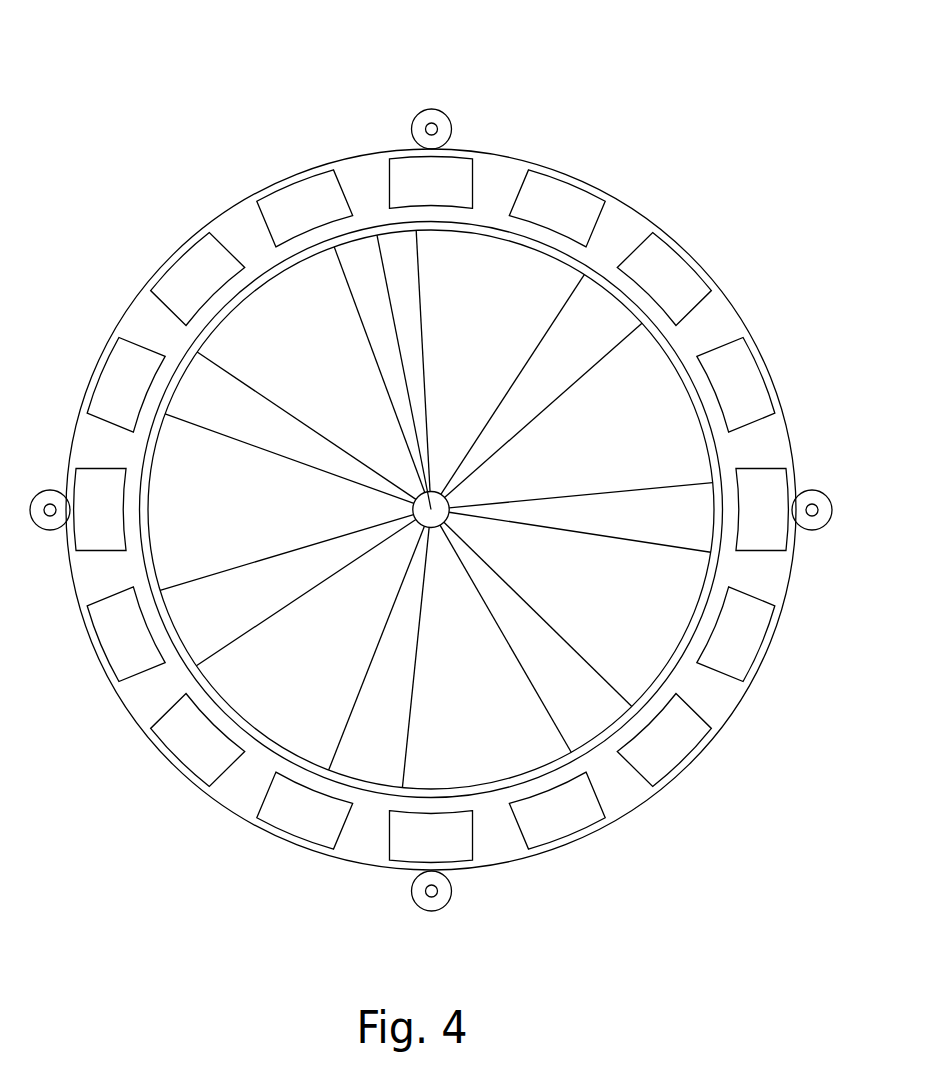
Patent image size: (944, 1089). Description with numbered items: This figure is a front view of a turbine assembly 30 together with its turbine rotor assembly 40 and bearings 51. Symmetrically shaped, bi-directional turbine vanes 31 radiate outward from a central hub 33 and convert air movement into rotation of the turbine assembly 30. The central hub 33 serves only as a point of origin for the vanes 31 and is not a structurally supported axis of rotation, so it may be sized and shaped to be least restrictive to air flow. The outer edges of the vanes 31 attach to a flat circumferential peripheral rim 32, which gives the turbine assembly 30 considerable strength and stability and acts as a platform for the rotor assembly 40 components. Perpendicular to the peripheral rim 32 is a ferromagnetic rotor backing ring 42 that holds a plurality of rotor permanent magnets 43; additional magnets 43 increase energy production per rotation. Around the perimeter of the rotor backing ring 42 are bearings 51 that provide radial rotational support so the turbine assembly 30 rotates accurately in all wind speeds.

The turbine assembly 30 is at (680, 340).
The turbine vanes 31 is at (320, 330).
The peripheral rim 32 is at (227, 317).
The central hub 33 is at (393, 262).
The turbine rotor assembly 40 is at (522, 147).
The rotor backing ring 42 is at (158, 330).
The rotor permanent magnets 43 is at (588, 210).
The bearings 51 is at (437, 126).